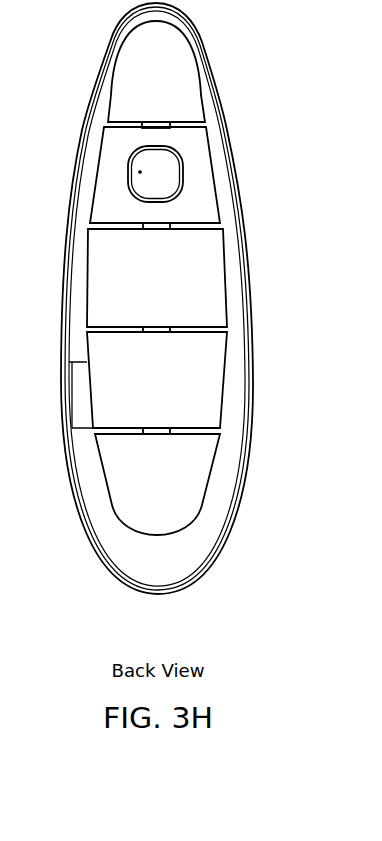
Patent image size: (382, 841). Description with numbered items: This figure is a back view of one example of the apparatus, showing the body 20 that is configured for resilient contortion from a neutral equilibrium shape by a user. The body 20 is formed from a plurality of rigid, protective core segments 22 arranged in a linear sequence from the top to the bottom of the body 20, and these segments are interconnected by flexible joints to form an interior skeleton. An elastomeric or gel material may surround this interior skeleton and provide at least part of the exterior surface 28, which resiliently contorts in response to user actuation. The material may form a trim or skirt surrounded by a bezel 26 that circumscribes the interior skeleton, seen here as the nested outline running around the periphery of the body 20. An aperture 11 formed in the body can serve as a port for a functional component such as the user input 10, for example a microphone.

The user input 10 is at (140, 172).
The aperture 11 is at (183, 177).
The body 20 is at (143, 325).
The core segments 22 is at (168, 85).
The bezel 26 is at (61, 328).
The exterior surface 28 is at (88, 248).